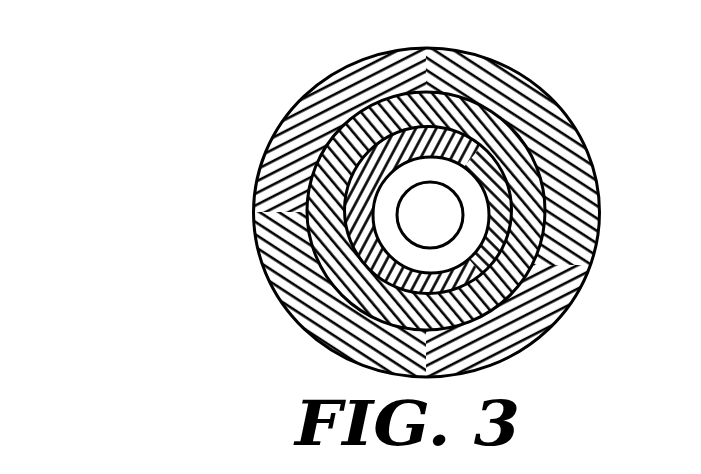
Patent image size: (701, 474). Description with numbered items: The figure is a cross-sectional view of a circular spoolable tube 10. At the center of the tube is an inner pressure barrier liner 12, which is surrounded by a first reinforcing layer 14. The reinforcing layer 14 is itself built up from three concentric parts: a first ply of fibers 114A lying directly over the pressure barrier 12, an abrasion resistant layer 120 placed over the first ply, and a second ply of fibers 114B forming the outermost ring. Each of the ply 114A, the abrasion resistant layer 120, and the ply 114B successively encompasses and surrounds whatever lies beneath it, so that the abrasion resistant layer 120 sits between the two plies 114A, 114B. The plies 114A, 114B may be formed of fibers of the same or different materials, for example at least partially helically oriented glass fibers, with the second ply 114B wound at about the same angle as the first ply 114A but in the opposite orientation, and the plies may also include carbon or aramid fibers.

The spoolable tube 10 is at (284, 87).
The inner pressure barrier liner 12 is at (477, 210).
The first reinforcing layer 14 is at (306, 206).
The first ply of fibers 114A is at (350, 175).
The abrasion resistant layer 120 is at (328, 205).
The second ply of fibers 114B is at (298, 258).